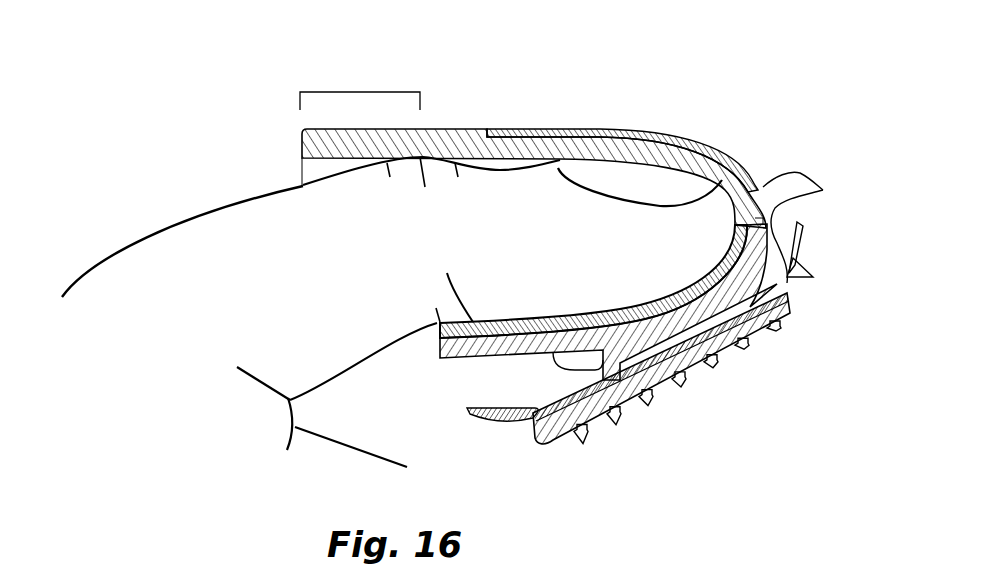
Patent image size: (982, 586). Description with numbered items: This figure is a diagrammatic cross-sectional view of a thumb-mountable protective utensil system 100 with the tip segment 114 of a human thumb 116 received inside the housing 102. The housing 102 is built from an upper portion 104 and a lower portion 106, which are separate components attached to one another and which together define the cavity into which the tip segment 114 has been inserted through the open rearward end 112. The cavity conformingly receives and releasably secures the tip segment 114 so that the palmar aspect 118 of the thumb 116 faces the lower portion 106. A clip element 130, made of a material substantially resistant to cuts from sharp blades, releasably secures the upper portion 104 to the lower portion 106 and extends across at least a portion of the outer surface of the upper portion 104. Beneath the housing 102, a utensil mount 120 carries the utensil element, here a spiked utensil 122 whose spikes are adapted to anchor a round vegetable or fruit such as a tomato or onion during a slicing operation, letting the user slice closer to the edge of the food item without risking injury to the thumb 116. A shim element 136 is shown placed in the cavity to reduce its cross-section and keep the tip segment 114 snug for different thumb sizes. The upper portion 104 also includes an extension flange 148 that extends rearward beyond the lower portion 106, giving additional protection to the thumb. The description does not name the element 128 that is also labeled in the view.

The thumb-mountable protective utensil system 100 is at (741, 87).
The housing 102 is at (823, 190).
The upper portion 104 is at (470, 130).
The lower portion 106 is at (557, 350).
The open rearward end 112 is at (266, 164).
The tip segment 114 is at (622, 207).
The human thumb 116 is at (137, 144).
The palmar aspect 118 is at (596, 283).
The utensil mount 120 is at (546, 452).
The spiked utensil 122 is at (740, 323).
The blade 128 is at (507, 420).
The clip element 130 is at (672, 138).
The shim element 136 is at (437, 332).
The extension flange 148 is at (360, 92).